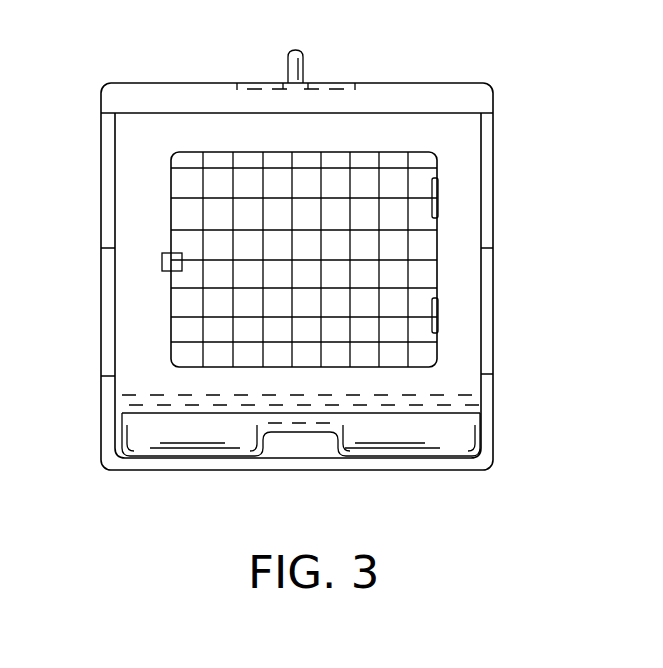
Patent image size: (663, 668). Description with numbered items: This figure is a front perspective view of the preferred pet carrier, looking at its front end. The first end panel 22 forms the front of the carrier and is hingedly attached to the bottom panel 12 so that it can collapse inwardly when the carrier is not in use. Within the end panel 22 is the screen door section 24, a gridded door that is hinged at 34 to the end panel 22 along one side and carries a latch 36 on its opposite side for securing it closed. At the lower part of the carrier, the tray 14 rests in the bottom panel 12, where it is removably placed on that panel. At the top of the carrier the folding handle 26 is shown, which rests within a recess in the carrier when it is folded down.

The bottom panel 12 is at (488, 430).
The tray 14 is at (398, 432).
The first end panel 22 is at (457, 320).
The screen door section 24 is at (394, 251).
The folding handle 26 is at (302, 55).
The hinge 34 is at (440, 190).
The latch 36 is at (163, 265).